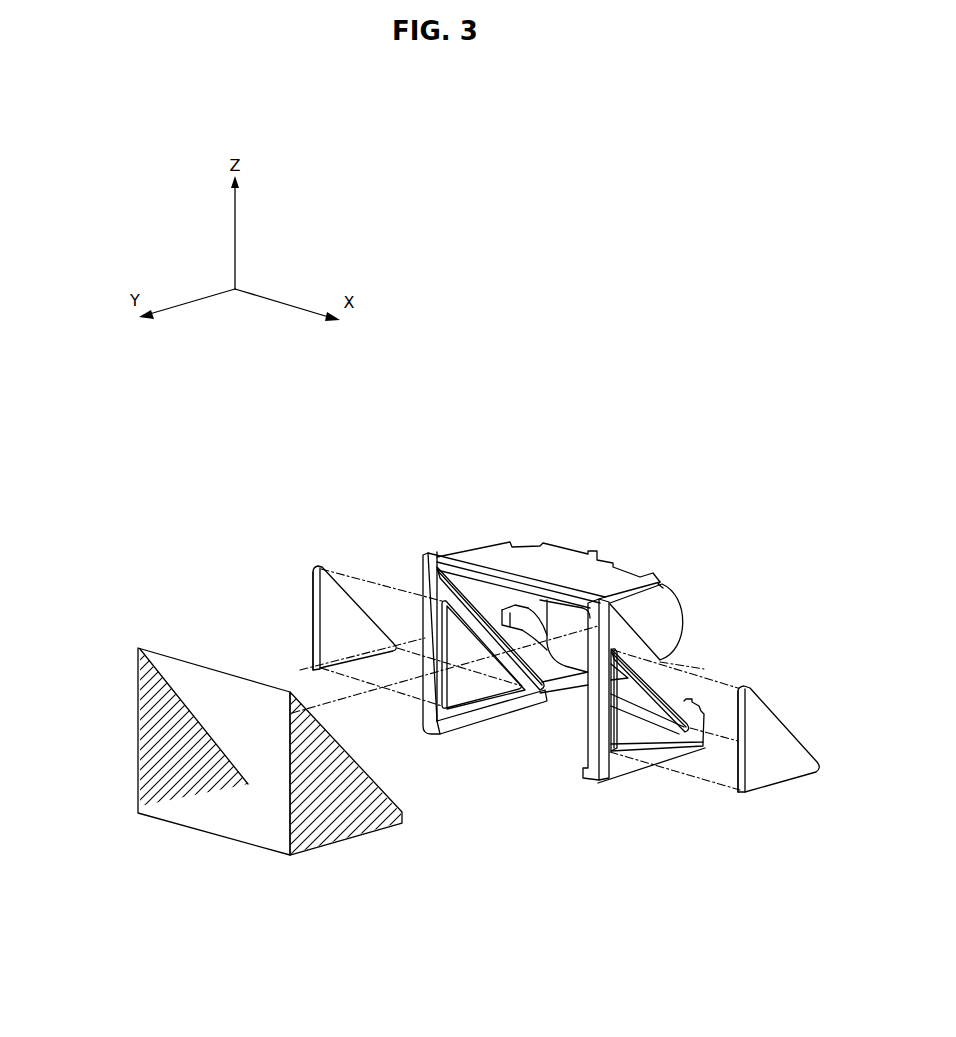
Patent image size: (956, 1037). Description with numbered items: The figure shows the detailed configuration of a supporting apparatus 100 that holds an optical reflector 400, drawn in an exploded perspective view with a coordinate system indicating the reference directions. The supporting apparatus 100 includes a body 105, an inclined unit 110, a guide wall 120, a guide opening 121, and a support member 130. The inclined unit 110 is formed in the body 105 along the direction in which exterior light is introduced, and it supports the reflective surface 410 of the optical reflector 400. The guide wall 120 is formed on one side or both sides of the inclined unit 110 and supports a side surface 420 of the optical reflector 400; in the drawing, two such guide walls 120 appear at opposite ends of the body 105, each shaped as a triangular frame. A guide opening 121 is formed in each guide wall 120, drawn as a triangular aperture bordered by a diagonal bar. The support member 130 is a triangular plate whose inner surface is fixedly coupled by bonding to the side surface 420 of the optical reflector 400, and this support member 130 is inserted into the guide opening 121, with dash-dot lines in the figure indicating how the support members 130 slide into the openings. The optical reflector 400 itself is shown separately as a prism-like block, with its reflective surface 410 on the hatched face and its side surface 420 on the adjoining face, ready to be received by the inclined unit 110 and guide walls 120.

The supporting apparatus 100 is at (275, 463).
The body 105 is at (566, 558).
The inclined unit 110 is at (580, 678).
The guide wall 120 is at (425, 587).
The guide opening 121 is at (463, 641).
The support member 130 is at (312, 606).
The optical reflector 400 is at (102, 717).
The reflective surface 410 is at (245, 735).
The side surface 420 is at (153, 690).